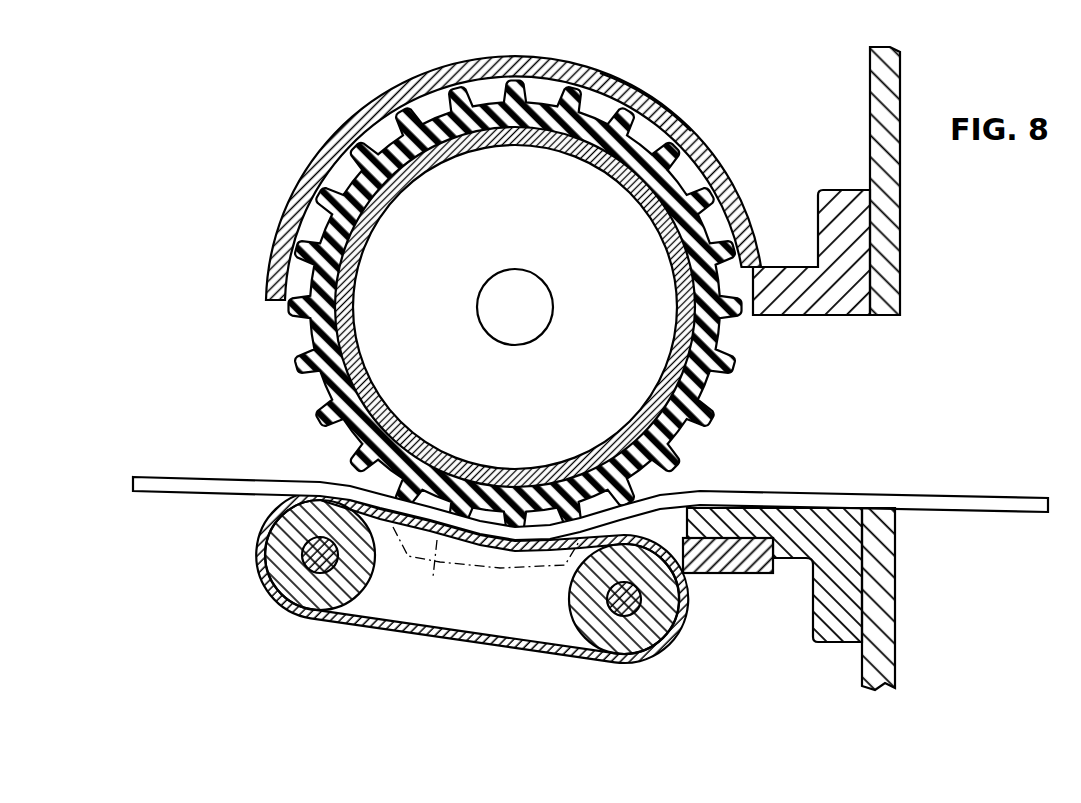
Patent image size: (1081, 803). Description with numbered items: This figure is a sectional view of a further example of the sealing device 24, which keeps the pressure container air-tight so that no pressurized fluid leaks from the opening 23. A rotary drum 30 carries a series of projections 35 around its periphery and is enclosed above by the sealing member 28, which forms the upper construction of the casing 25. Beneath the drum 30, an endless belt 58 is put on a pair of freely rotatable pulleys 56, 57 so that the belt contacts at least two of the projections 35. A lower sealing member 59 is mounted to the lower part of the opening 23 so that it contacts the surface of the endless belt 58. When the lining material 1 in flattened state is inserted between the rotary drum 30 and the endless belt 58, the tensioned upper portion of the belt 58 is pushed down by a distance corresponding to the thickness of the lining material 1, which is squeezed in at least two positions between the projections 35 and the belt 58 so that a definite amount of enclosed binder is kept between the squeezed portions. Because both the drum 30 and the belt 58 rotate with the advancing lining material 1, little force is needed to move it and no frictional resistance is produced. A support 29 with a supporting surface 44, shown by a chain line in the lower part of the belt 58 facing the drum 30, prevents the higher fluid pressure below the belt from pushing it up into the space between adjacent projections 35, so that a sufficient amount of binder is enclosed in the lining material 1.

The lining material 1 is at (909, 500).
The opening 23 is at (870, 368).
The sealing device 24 is at (758, 132).
The casing 25 is at (661, 85).
The sealing member 28 is at (448, 68).
The support 29 is at (533, 572).
The rotary drum 30 is at (280, 364).
The projections 35 is at (318, 414).
The supporting surface 44 is at (427, 576).
The pulley 56 is at (272, 563).
The pulley 57 is at (668, 641).
The endless belt 58 is at (473, 642).
The lower sealing member 59 is at (722, 566).